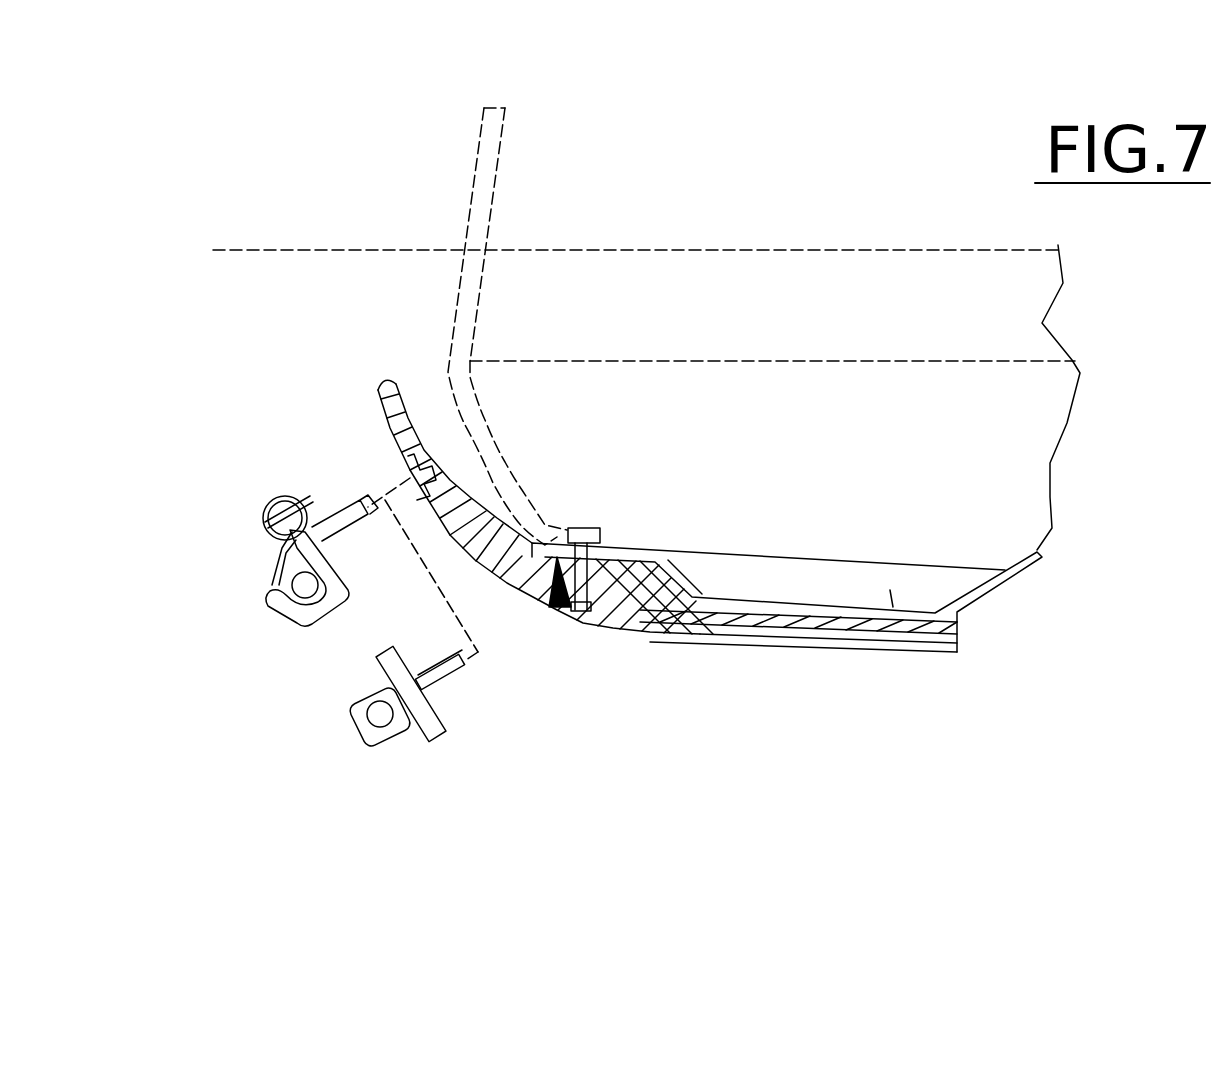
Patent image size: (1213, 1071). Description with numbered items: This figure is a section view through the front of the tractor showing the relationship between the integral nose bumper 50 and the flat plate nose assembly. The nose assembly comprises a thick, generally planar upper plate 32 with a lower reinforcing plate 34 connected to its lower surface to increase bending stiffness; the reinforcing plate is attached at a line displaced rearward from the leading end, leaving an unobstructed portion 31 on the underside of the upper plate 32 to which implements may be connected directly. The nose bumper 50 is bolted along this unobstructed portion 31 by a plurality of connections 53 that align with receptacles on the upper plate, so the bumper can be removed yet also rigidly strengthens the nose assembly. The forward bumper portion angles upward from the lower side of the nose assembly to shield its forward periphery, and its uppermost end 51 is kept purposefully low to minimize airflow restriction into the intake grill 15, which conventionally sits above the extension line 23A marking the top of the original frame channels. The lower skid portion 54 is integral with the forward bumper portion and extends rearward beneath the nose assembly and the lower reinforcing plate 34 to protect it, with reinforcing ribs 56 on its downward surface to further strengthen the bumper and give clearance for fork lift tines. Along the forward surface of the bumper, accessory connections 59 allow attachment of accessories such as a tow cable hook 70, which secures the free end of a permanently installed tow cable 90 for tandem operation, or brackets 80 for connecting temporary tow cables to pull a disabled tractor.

The intake grill 15 is at (482, 135).
The extension line 23A is at (644, 384).
The uppermost end of forward bumper portion 51 is at (383, 378).
The connections 53 is at (392, 410).
The accessory connections 59 is at (332, 474).
The tow cable hook 70 is at (222, 650).
The tow cable 90 is at (303, 585).
The brackets 80 is at (297, 729).
The upper plate 32 is at (769, 554).
The lower reinforcing plate 34 is at (893, 607).
The lower skid portion 54 is at (958, 632).
The reinforcing ribs 56 is at (821, 642).
The unobstructed portion 31 is at (562, 608).
The nose bumper 50 is at (556, 714).